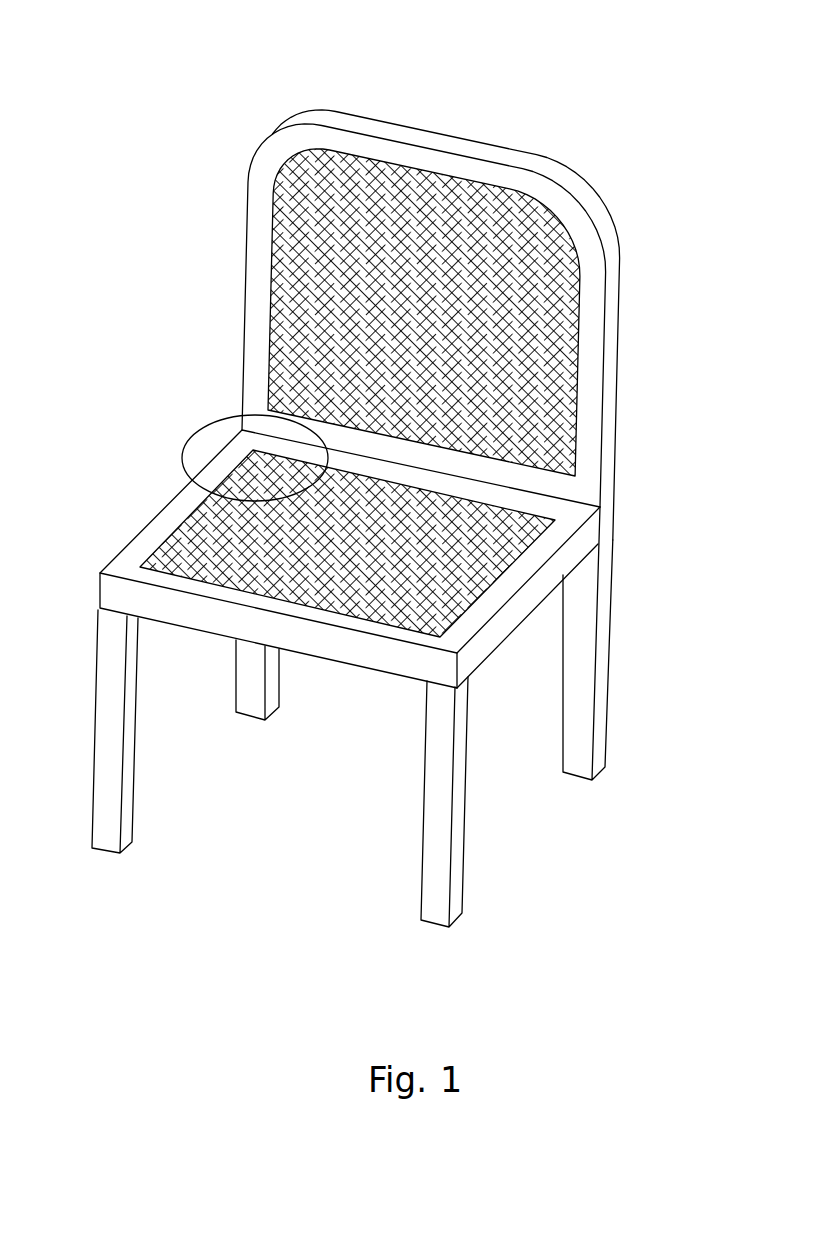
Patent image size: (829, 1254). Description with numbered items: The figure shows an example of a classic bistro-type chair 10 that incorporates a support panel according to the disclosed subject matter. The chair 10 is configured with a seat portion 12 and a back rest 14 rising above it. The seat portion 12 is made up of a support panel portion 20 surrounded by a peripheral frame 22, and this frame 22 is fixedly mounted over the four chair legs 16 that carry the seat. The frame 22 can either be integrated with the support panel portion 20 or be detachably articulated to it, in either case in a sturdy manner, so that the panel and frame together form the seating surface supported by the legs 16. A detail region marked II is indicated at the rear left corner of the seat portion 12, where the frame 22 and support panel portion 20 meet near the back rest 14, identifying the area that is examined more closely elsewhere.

The bistro-type chair 10 is at (197, 172).
The seat portion 12 is at (486, 546).
The back rest 14 is at (538, 368).
The chair legs 16 is at (583, 747).
The support panel portion 20 is at (408, 586).
The peripheral frame 22 is at (122, 593).
The detail section indicator II is at (198, 432).